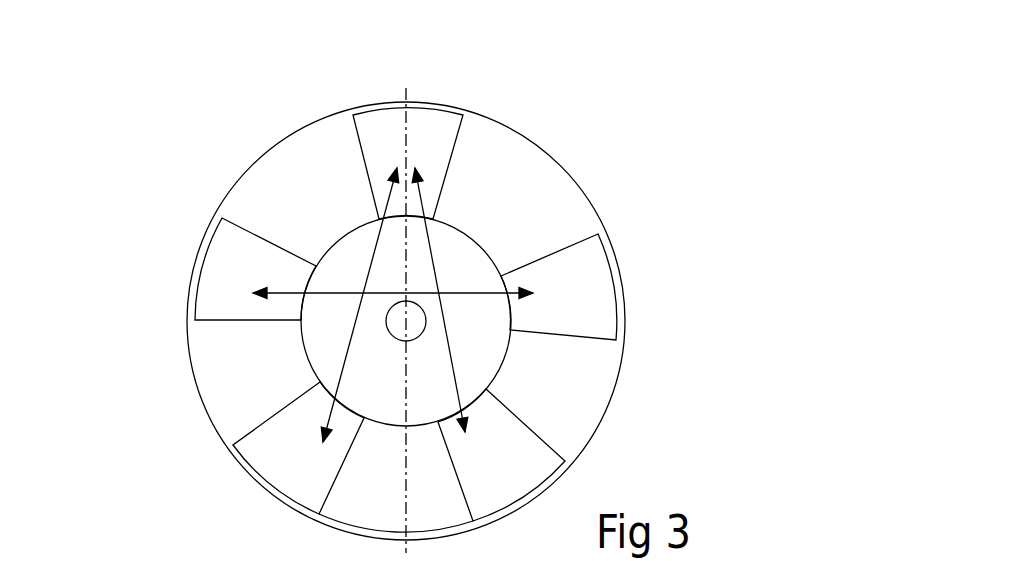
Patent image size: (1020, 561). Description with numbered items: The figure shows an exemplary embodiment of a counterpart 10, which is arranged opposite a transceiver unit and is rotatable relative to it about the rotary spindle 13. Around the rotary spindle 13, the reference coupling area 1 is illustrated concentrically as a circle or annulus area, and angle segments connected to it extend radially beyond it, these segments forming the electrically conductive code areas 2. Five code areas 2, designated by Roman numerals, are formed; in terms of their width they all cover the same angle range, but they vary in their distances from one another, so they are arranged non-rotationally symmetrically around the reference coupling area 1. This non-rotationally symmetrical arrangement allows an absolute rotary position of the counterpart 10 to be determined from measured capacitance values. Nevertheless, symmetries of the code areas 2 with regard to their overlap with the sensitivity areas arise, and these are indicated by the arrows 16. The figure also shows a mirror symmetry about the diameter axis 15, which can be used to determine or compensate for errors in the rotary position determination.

The counterpart 10 is at (448, 321).
The code areas 2 is at (452, 320).
The reference coupling area 1 is at (506, 321).
The rotary spindle 13 is at (553, 387).
The diameter axis 15 is at (303, 320).
The arrows 16 is at (373, 257).